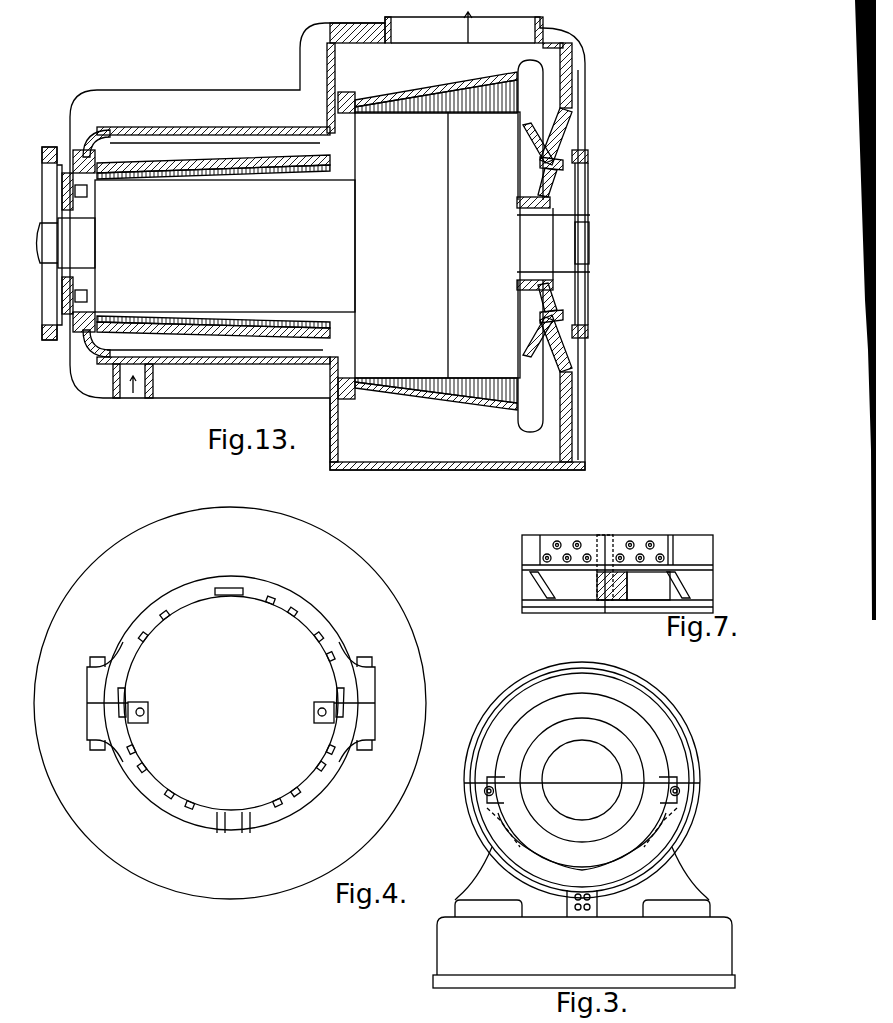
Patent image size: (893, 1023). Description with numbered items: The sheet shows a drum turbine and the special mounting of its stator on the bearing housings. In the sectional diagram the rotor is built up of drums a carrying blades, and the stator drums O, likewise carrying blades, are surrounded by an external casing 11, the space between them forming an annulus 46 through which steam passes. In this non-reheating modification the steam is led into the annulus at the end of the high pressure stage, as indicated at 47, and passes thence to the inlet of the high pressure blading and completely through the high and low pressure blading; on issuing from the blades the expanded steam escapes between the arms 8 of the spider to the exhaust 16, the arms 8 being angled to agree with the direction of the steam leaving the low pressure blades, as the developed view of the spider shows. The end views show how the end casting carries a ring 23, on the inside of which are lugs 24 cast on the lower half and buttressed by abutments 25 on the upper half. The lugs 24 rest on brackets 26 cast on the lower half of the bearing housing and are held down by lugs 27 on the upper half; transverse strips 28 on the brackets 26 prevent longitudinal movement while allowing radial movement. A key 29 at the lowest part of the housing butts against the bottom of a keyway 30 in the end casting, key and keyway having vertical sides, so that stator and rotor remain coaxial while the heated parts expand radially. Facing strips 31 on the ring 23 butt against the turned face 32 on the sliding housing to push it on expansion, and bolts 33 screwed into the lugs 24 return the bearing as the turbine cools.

In FIG. 13, the arms of the spider 8 is at (530, 100).
In FIG. 7, the arms of the spider 8 is at (545, 588).
In FIG. 13, the external casing 11 is at (253, 377).
In FIG. 13, the exhaust 16 is at (487, 28).
In FIG. 13, the annulus 46 is at (260, 150).
In FIG. 13, the steam inlet to annulus 47 is at (127, 398).
In FIG. 13, the stator drum O is at (448, 88).
In FIG. 13, the rotor drum a is at (307, 245).
In FIG. 4, the ring 23 is at (145, 613).
In FIG. 4, the lugs 24 is at (147, 727).
In FIG. 4, the abutments 25 is at (127, 693).
In FIG. 4, the keyway 30 is at (233, 832).
In FIG. 4, the facing strips 31 is at (296, 612).
In FIG. 3, the brackets 26 is at (487, 810).
In FIG. 3, the lugs on housing 27 is at (660, 775).
In FIG. 3, the strips 28 is at (680, 797).
In FIG. 3, the key 29 is at (577, 908).
In FIG. 3, the turned face 32 is at (673, 714).
In FIG. 3, the bolts 33 is at (682, 790).